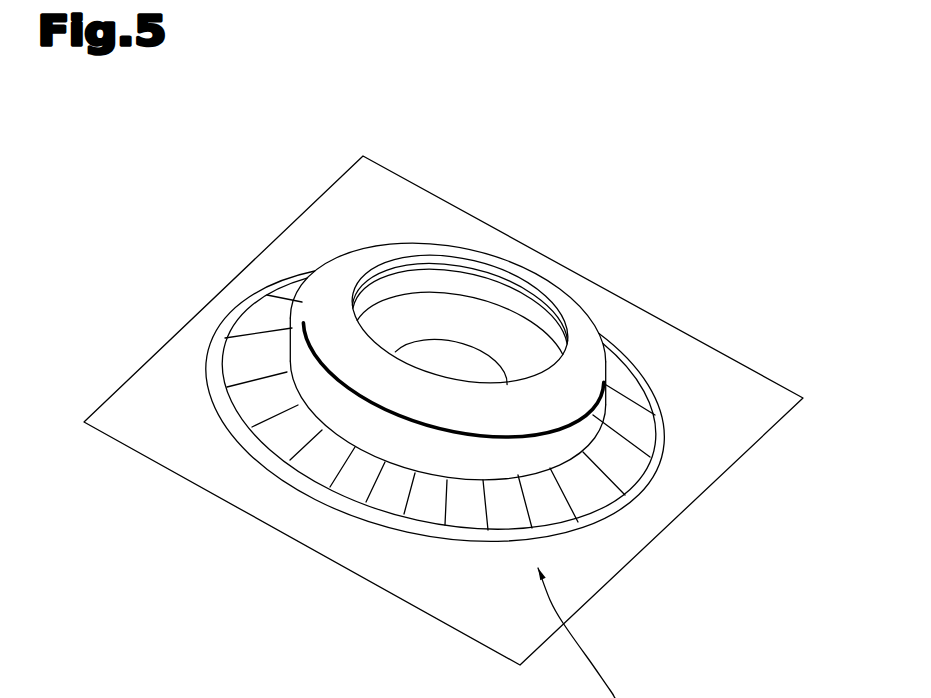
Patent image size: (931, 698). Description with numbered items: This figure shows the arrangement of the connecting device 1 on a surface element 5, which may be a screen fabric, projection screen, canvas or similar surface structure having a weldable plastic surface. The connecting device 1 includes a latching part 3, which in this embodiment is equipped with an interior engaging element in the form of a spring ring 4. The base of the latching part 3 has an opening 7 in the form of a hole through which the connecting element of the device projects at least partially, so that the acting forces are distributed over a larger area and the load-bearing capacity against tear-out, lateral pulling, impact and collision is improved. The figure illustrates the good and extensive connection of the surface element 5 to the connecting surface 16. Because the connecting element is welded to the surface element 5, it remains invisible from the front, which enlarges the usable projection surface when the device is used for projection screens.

The connecting device 1 is at (715, 107).
The latching part 3 is at (543, 403).
The spring ring 4 is at (385, 287).
The surface element 5 is at (698, 378).
The opening 7 is at (460, 360).
The connecting surface 16 is at (320, 463).